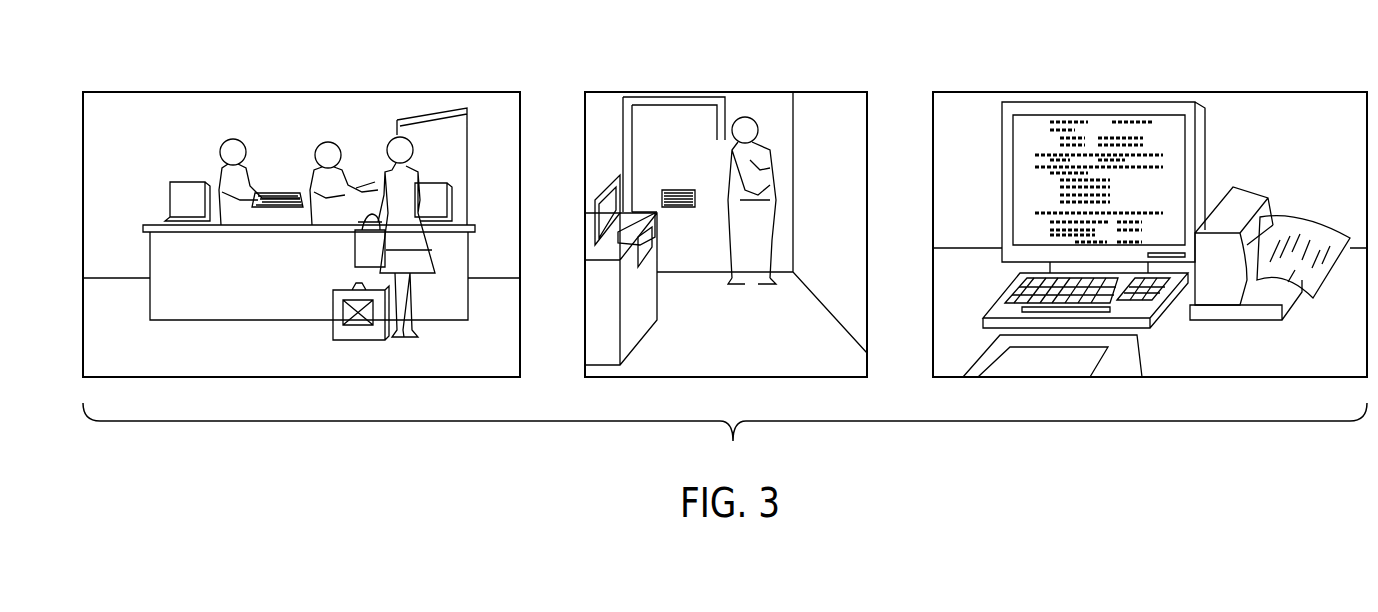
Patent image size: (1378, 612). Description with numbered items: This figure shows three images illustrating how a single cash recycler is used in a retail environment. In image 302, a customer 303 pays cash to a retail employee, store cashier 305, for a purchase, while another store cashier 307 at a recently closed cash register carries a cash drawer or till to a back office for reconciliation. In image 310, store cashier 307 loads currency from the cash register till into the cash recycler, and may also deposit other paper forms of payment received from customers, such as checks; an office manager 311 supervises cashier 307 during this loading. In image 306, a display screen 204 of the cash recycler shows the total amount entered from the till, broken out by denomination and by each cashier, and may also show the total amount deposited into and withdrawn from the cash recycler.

The image 302 is at (119, 112).
The store cashier 307 is at (230, 140).
The store cashier 305 is at (323, 142).
The customer 303 is at (418, 257).
The image 310 is at (820, 110).
The office manager 311 is at (770, 207).
The display device 204 is at (1038, 128).
The image 306 is at (1297, 105).